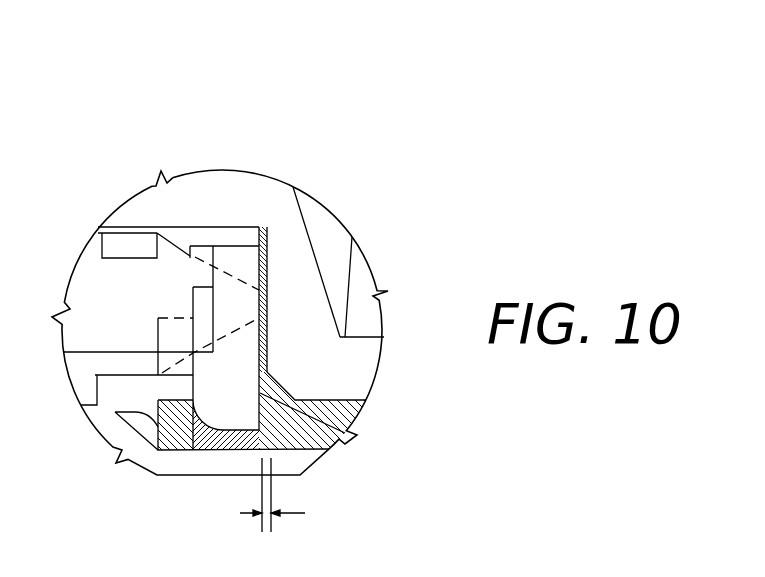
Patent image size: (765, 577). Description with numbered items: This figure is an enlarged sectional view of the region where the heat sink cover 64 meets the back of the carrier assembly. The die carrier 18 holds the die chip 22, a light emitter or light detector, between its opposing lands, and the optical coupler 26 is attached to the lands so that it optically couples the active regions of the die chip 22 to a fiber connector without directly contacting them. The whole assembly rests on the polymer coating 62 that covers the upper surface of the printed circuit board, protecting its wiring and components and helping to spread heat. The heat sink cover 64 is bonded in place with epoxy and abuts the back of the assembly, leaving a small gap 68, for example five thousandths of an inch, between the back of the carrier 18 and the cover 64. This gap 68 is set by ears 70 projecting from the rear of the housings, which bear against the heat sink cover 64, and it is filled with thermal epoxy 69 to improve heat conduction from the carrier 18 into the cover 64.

The die carrier 18 is at (233, 268).
The die chip 22 is at (205, 289).
The optical coupler 26 is at (98, 278).
The polymer coating 62 is at (367, 409).
The heat sink cover 64 is at (270, 248).
The gap 68 is at (306, 495).
The thermal epoxy 69 is at (305, 248).
The ears 70 is at (268, 297).